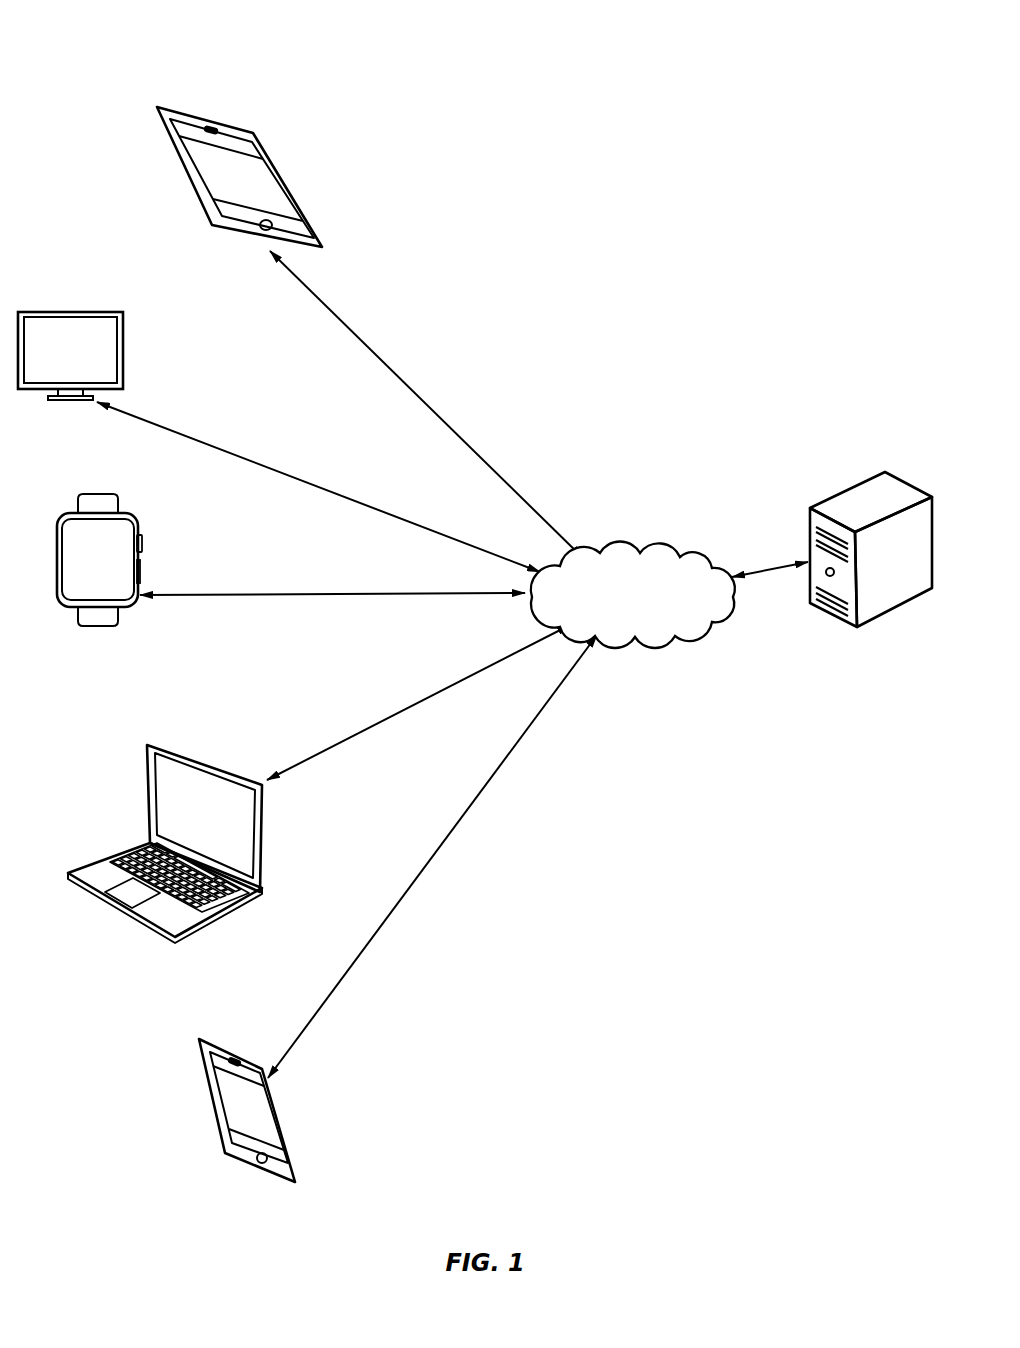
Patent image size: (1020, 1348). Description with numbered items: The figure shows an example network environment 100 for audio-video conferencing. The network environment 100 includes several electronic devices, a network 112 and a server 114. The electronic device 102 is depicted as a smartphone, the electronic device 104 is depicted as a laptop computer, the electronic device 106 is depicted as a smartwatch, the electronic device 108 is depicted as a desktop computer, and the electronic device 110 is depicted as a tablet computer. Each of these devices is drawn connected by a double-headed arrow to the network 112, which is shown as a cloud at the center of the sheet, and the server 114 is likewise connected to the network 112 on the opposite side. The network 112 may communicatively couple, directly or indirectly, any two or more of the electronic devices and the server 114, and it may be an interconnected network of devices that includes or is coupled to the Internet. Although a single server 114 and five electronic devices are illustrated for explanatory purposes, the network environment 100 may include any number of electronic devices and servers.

The network environment 100 is at (58, 82).
The electronic device 102 is at (243, 1169).
The electronic device 104 is at (78, 888).
The electronic device 106 is at (88, 623).
The electronic device 108 is at (69, 311).
The electronic device 110 is at (205, 117).
The network 112 is at (630, 638).
The server 114 is at (850, 487).